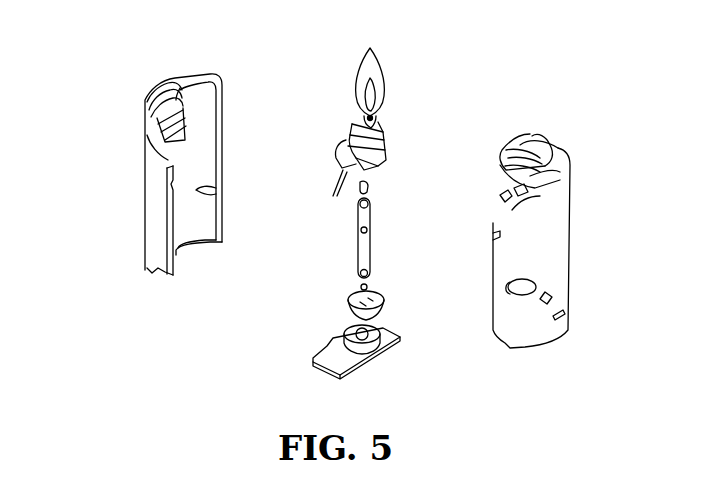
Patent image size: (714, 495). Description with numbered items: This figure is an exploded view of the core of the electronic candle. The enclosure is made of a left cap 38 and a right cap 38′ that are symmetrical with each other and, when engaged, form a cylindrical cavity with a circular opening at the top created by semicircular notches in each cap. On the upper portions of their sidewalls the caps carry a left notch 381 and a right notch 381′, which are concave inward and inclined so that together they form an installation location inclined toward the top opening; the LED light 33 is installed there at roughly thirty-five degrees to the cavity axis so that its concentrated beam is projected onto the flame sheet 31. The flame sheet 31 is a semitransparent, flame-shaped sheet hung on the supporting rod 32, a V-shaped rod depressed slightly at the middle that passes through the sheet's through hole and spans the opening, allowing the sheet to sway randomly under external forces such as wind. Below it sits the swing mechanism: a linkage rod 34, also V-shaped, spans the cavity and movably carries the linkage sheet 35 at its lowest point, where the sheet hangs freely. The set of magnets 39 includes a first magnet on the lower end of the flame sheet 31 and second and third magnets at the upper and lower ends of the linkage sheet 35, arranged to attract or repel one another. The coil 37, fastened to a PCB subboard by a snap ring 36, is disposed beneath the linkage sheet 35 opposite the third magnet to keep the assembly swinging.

The flame sheet 31 is at (360, 62).
The supporting rod 32 is at (365, 118).
The LED light 33 is at (340, 158).
The linkage rod 34 is at (358, 226).
The linkage sheet 35 is at (358, 264).
The snap ring 36 is at (350, 305).
The coil 37 is at (335, 341).
The left cap 38 is at (175, 80).
The left notch 381 is at (160, 147).
The right cap 38′ is at (534, 136).
The right notch 381′ is at (500, 215).
The set of magnets 39 is at (372, 280).